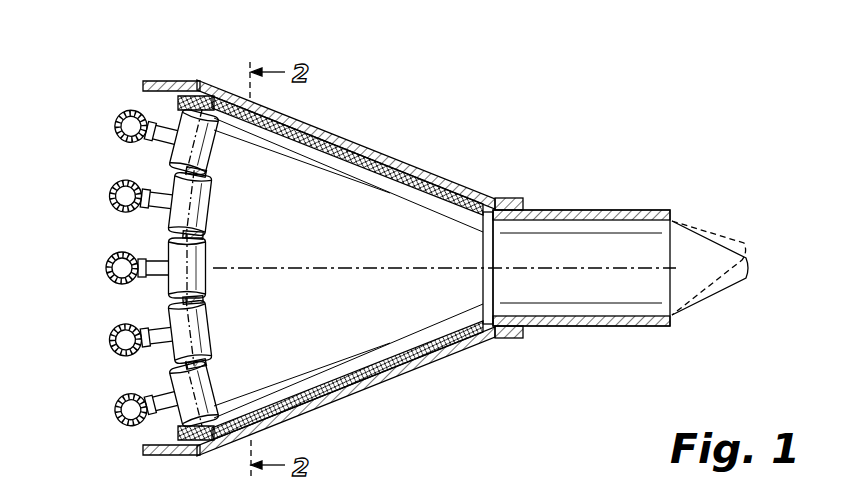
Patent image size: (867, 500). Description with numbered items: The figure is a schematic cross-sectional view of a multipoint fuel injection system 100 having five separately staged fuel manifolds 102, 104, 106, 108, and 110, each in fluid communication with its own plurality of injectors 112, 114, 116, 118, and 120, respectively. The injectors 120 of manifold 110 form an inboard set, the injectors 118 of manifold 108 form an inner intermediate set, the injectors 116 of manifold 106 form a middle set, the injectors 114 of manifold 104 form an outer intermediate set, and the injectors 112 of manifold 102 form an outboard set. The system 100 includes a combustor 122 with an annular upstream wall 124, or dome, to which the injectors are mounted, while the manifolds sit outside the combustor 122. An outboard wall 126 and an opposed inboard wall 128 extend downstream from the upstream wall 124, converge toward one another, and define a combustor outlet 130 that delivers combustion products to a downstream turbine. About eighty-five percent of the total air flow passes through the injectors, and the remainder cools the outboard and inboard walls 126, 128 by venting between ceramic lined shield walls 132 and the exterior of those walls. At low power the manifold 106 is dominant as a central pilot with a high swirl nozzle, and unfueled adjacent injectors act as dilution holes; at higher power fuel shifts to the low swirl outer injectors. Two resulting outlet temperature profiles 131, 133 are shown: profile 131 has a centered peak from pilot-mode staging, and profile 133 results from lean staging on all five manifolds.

The multipoint fuel injection system 100 is at (587, 89).
The fuel manifold 102 is at (116, 118).
The fuel manifold 104 is at (114, 186).
The fuel manifold 106 is at (106, 262).
The fuel manifold 108 is at (108, 336).
The fuel manifold 110 is at (108, 408).
The injectors 112 is at (207, 142).
The injectors 114 is at (210, 207).
The injectors 116 is at (200, 270).
The injectors 118 is at (208, 327).
The injectors 120 is at (210, 393).
The combustor 122 is at (448, 172).
The upstream wall 124 is at (168, 446).
The outboard wall 126 is at (379, 157).
The inboard wall 128 is at (387, 381).
The combustor outlet 130 is at (688, 198).
The temperature profile 131 is at (720, 293).
The shield walls 132 is at (335, 135).
The temperature profile 133 is at (730, 228).